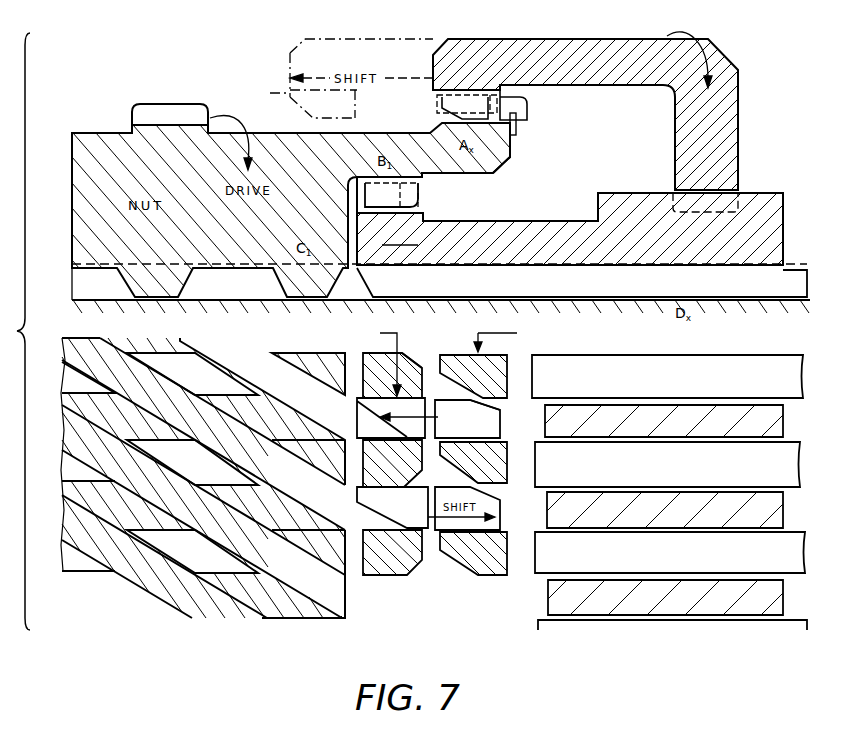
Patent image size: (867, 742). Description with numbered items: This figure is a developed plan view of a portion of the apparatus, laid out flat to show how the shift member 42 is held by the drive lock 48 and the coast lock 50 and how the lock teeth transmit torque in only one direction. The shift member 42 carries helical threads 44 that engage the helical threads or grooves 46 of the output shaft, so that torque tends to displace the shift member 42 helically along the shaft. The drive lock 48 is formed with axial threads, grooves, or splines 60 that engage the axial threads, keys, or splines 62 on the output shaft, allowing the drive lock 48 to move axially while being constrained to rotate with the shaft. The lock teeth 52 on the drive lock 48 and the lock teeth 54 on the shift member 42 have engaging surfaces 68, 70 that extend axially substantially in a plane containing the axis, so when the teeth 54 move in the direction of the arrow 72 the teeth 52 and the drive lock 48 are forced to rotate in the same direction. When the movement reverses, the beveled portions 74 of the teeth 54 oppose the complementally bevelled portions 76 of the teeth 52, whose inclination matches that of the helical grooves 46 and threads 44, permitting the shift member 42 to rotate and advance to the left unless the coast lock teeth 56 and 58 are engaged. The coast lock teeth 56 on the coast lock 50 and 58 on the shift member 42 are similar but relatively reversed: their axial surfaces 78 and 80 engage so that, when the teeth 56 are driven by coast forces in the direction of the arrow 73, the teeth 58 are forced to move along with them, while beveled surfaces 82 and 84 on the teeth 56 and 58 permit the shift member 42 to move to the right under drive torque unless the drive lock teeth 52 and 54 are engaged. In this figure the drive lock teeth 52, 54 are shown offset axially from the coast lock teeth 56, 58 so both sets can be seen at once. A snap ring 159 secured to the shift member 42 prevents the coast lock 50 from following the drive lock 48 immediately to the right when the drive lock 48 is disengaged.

The coast lock 50 is at (382, 37).
The lock teeth 56 is at (512, 419).
The lock teeth 58 is at (505, 107).
The snap ring 159 is at (516, 126).
The shift member 42 is at (507, 159).
The lock teeth 54 is at (420, 188).
The lock teeth 52 is at (422, 205).
The drive lock 48 is at (537, 228).
The helical threads 44 is at (255, 353).
The helical threads or grooves 46 is at (104, 389).
The arrow 72 is at (400, 350).
The beveled surface 84 is at (462, 380).
The arrow 73 is at (496, 342).
The engaging surface 68 is at (421, 397).
The beveled surface 82 is at (496, 404).
The axial surface 80 is at (499, 440).
The axial surface 78 is at (493, 453).
The engaging surface 70 is at (360, 432).
The beveled portion 74 is at (418, 447).
The beveled portion 76 is at (376, 512).
The axial threads, grooves, or splines 60 is at (778, 415).
The axial threads, keys, or splines 62 is at (750, 355).